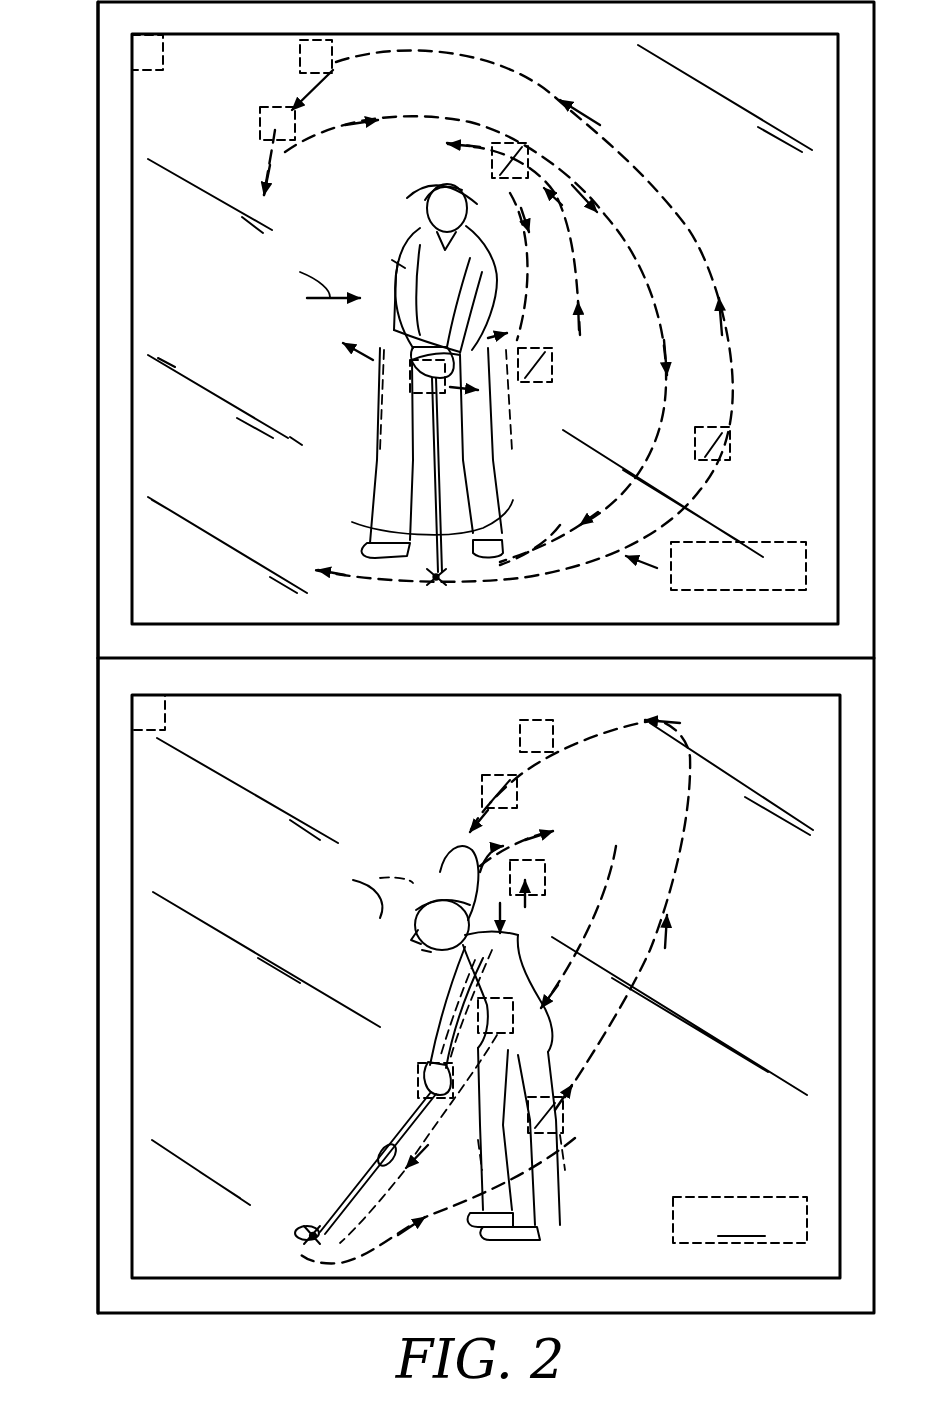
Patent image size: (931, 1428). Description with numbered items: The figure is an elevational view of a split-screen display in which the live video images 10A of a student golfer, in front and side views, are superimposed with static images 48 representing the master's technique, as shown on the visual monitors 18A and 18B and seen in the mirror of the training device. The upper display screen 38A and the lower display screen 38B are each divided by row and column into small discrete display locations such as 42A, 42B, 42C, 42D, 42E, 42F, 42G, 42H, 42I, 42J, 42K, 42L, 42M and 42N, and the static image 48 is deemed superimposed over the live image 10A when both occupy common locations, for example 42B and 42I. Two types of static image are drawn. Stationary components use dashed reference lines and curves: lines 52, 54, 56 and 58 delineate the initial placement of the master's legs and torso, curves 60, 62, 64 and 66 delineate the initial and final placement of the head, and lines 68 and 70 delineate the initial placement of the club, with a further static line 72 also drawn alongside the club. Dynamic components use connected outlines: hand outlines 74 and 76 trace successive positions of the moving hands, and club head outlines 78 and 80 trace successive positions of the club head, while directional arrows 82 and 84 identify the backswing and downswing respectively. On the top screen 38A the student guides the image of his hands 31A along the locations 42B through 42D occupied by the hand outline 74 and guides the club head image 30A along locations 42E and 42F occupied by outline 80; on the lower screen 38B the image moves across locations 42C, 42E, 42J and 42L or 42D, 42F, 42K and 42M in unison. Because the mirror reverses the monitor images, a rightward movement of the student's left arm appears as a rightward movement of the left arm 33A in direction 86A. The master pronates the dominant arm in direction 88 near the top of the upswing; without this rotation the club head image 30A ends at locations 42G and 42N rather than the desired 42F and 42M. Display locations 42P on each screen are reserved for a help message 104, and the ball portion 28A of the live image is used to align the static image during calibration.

The live image of the student 10A is at (413, 217).
The visual monitor 18A is at (95, 292).
The visual monitor 18B is at (96, 944).
The ball portion of the live image 28A is at (432, 578).
The club head image 30A is at (442, 585).
The on-screen image of the hands 31A is at (400, 383).
The left arm 33A is at (407, 273).
The display screen 38A is at (150, 128).
The display screen 38B is at (167, 785).
The display location 42A is at (163, 60).
The display location 42B is at (395, 405).
The display location 42C is at (552, 365).
The display location 42D is at (530, 140).
The display location 42E is at (730, 447).
The display location 42F is at (260, 113).
The display location 42G is at (300, 70).
The display location 42H is at (165, 700).
The display location 42I is at (413, 1088).
The display location 42J is at (510, 983).
The display location 42K is at (548, 883).
The display location 42L is at (563, 1133).
The display location 42M is at (503, 775).
The display location 42N is at (520, 743).
The display locations reserved for help message 42P is at (807, 548).
The static image 48 is at (653, 565).
The dashed reference line 52 is at (377, 473).
The dashed reference line 54 is at (500, 473).
The dashed reference line 56 is at (477, 1190).
The dashed reference line 58 is at (543, 1190).
The reference curve 60 is at (423, 194).
The reference curve 62 is at (458, 170).
The reference curve 64 is at (455, 844).
The reference curve 66 is at (370, 883).
The reference line 68 is at (410, 518).
The reference line 70 is at (390, 1143).
The club shaft path 72 is at (500, 512).
The hand outline 74 is at (567, 330).
The hand outline 76 is at (523, 948).
The club head outline 78 is at (657, 937).
The club head outline 80 is at (732, 352).
The directional arrow 82 is at (583, 110).
The directional arrow 84 is at (598, 208).
The rightward direction 86A is at (300, 276).
The direction of rotation 88 is at (380, 338).
The help message 104 is at (741, 1222).